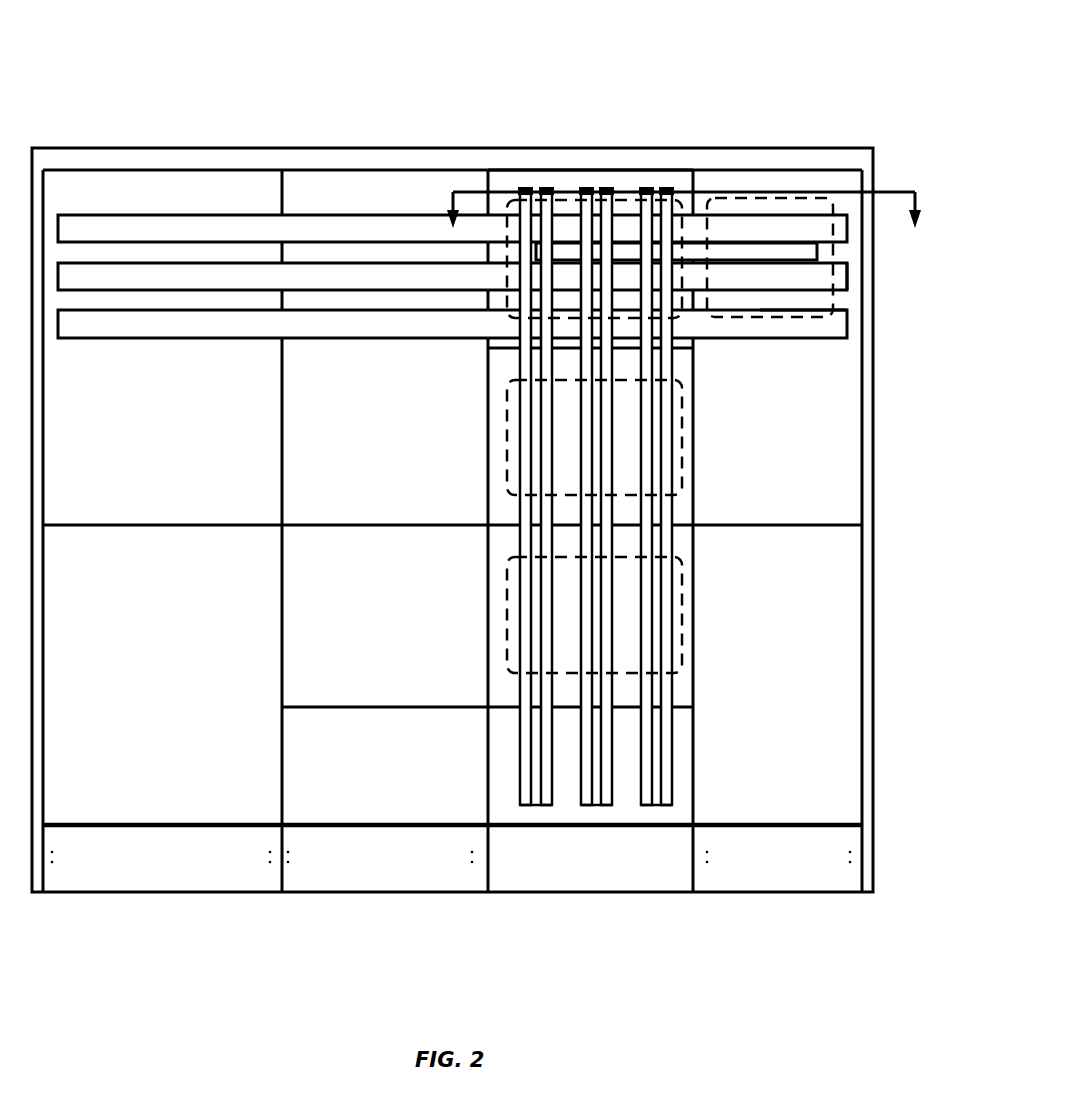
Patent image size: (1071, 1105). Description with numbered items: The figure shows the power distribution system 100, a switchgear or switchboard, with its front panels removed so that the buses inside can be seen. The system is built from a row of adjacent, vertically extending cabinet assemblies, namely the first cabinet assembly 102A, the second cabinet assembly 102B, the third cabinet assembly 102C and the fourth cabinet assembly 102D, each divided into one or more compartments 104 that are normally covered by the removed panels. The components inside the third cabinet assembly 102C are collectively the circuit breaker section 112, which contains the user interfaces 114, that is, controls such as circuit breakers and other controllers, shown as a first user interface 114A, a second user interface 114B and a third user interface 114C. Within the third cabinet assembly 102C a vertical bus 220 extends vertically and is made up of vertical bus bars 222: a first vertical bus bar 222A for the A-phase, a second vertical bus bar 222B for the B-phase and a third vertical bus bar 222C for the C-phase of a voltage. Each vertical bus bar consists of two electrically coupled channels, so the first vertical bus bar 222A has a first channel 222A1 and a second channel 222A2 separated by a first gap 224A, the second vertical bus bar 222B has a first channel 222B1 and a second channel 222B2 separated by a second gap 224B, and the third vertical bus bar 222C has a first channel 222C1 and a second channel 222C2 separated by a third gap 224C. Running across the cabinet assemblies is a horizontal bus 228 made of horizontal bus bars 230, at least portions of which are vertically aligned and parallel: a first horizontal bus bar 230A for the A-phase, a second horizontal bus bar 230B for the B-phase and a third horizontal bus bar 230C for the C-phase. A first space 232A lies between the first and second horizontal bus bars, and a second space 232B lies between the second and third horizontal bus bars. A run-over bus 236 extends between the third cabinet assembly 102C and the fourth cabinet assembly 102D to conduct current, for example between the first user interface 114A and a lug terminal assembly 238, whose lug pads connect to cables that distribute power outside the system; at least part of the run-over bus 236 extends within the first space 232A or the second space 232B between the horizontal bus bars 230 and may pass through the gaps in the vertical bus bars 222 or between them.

The power distribution system 100 is at (290, 55).
The first cabinet assembly 102A is at (148, 160).
The second cabinet assembly 102B is at (320, 160).
The third cabinet assembly 102C is at (660, 160).
The fourth cabinet assembly 102D is at (820, 160).
The compartment 104 is at (228, 170).
The circuit breaker section 112 is at (590, 160).
The user interface 114 is at (577, 461).
The first user interface 114A is at (507, 318).
The second user interface 114B is at (507, 432).
The third user interface 114C is at (507, 597).
The vertical bus 220 is at (665, 557).
The vertical bus bars 222 is at (596, 558).
The first vertical bus bar 222A is at (472, 497).
The first channel 222A1 is at (520, 718).
The second channel 222A2 is at (540, 748).
The second vertical bus bar 222B is at (631, 558).
The first channel 222B1 is at (582, 807).
The second channel 222B2 is at (607, 807).
The third vertical bus bar 222C is at (720, 497).
The first channel 222C1 is at (652, 765).
The second channel 222C2 is at (672, 745).
The first gap 224A is at (535, 824).
The second gap 224B is at (595, 824).
The third gap 224C is at (668, 817).
The horizontal bus 228 is at (452, 284).
The horizontal bus bars 230 is at (452, 284).
The first horizontal bus bar 230A is at (248, 213).
The second horizontal bus bar 230B is at (210, 292).
The third horizontal bus bar 230C is at (265, 338).
The first space 232A is at (848, 262).
The second space 232B is at (851, 310).
The run-over bus 236 is at (805, 248).
The lug terminal assembly 238 is at (813, 313).